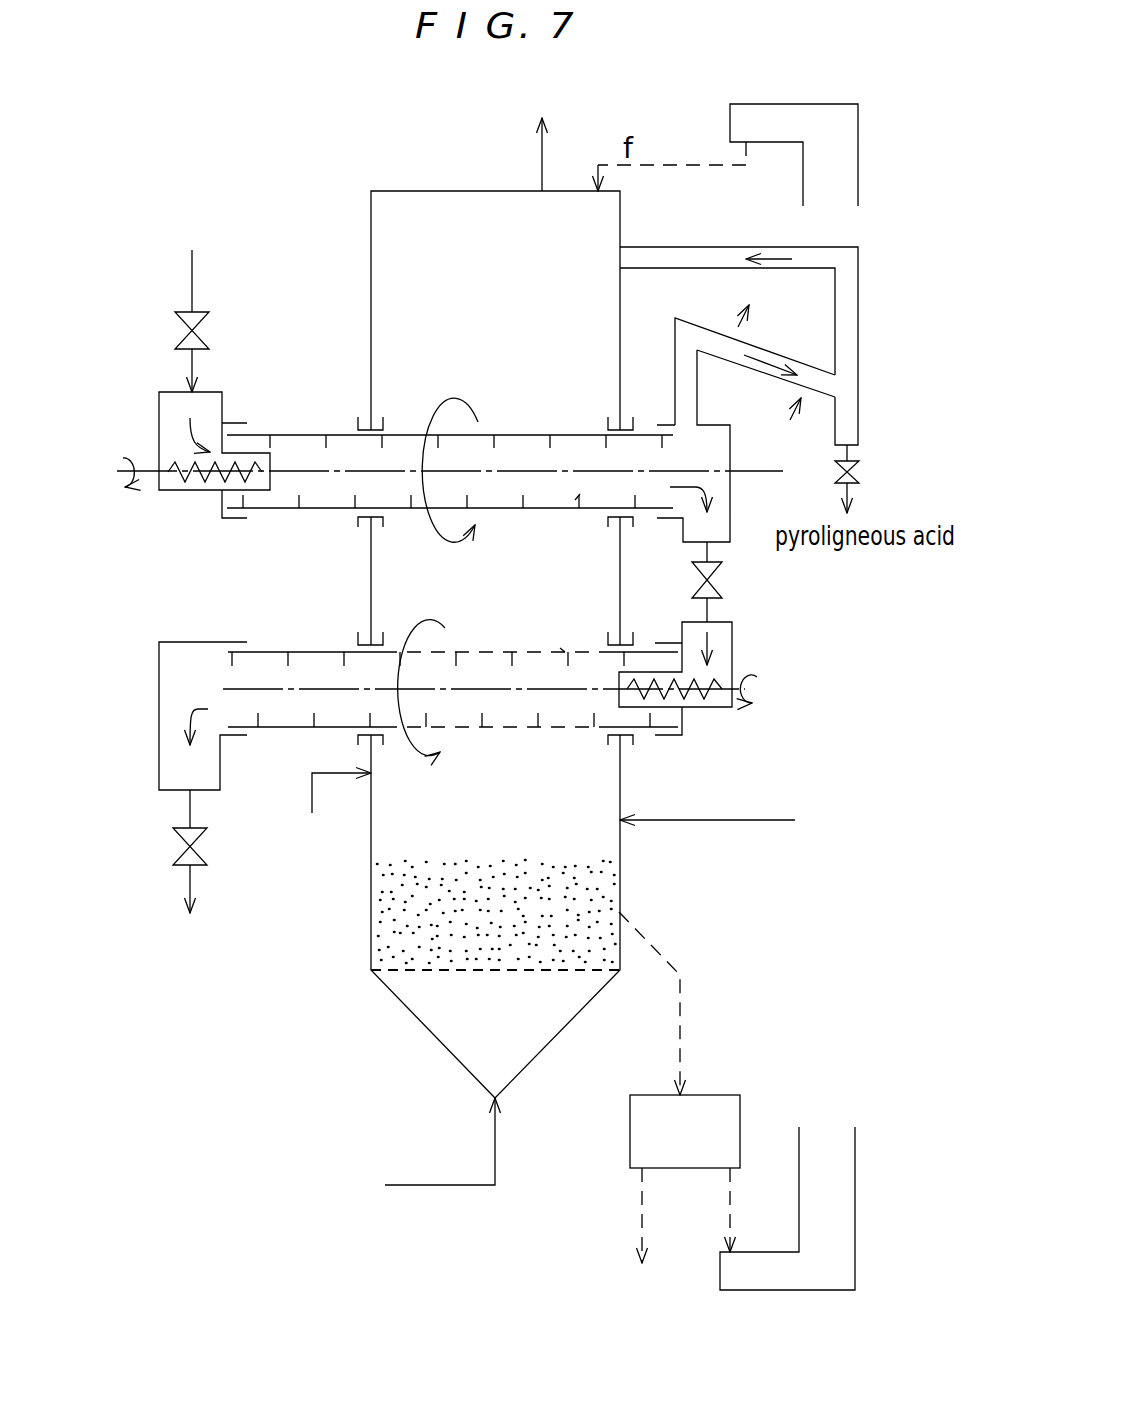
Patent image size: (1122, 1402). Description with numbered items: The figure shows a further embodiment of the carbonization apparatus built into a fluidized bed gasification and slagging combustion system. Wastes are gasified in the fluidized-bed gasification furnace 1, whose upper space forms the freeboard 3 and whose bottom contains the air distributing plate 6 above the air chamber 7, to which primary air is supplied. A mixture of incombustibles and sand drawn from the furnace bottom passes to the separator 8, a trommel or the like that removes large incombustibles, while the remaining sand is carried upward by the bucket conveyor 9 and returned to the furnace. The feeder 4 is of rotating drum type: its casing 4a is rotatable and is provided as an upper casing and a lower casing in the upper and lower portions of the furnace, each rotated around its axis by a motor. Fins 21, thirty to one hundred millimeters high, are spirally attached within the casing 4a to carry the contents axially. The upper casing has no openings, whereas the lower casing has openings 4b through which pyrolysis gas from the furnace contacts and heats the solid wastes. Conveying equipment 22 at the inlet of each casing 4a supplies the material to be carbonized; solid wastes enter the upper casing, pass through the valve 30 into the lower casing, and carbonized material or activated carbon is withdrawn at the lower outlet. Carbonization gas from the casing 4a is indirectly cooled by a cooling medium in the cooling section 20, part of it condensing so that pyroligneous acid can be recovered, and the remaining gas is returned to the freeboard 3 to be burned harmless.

The fluidized-bed gasification furnace 1 is at (412, 190).
The freeboard 3 is at (474, 240).
The feeder 4 is at (322, 645).
The casing 4a is at (524, 435).
The openings 4b is at (480, 745).
The air distributing plate 6 is at (566, 975).
The air chamber 7 is at (430, 1022).
The separator 8 is at (630, 1150).
The bucket conveyor 9 is at (856, 1192).
The cooling section 20 is at (778, 347).
The fins 21 is at (560, 648).
The conveying equipment 22 is at (158, 483).
The valve 30 is at (716, 578).